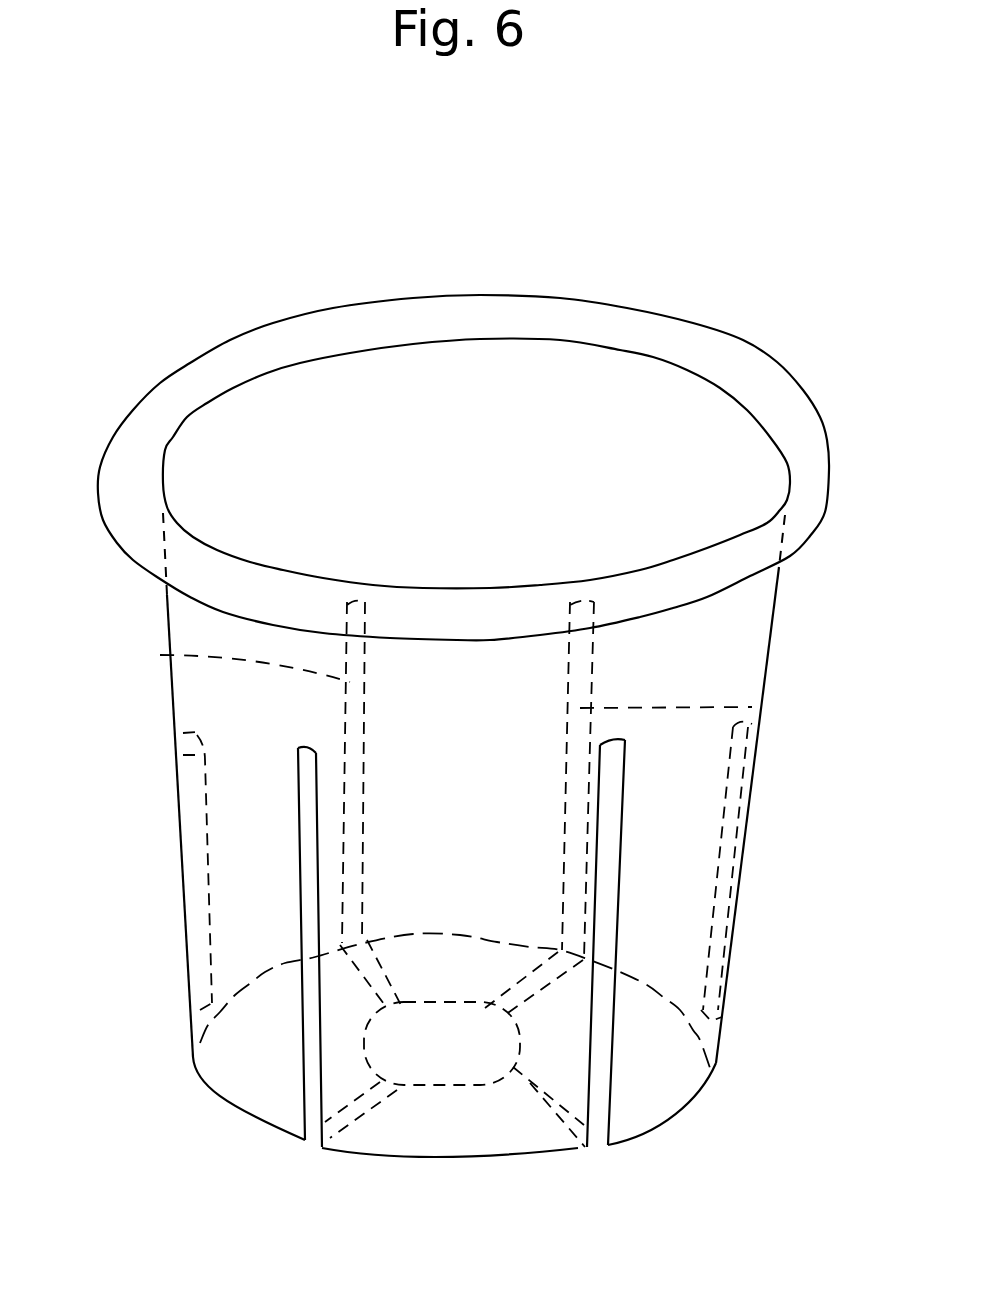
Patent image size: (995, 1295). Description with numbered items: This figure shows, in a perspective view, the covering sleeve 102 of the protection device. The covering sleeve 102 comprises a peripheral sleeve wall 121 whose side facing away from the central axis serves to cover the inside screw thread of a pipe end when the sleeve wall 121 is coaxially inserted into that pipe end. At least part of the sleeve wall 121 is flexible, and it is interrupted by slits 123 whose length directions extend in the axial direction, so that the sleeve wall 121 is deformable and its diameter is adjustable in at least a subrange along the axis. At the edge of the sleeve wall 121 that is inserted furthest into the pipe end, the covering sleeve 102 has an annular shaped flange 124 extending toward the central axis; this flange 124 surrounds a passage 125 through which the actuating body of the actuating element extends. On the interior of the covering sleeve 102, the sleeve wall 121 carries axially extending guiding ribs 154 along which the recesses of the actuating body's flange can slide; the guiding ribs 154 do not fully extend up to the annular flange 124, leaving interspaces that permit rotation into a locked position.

The covering sleeve 102 is at (818, 622).
The sleeve wall 121 is at (733, 672).
The slits 123 is at (160, 655).
The annular shaped flange 124 is at (470, 1125).
The passage 125 is at (468, 1059).
The guiding ribs 154 is at (198, 798).